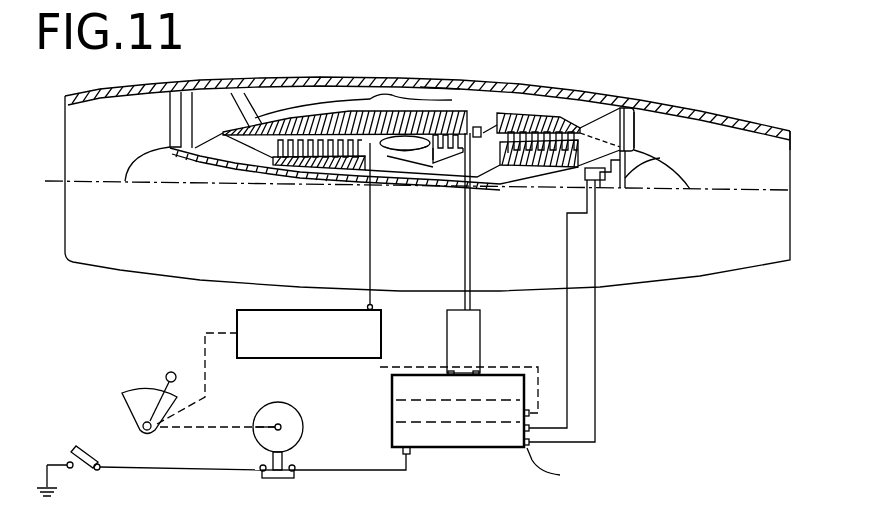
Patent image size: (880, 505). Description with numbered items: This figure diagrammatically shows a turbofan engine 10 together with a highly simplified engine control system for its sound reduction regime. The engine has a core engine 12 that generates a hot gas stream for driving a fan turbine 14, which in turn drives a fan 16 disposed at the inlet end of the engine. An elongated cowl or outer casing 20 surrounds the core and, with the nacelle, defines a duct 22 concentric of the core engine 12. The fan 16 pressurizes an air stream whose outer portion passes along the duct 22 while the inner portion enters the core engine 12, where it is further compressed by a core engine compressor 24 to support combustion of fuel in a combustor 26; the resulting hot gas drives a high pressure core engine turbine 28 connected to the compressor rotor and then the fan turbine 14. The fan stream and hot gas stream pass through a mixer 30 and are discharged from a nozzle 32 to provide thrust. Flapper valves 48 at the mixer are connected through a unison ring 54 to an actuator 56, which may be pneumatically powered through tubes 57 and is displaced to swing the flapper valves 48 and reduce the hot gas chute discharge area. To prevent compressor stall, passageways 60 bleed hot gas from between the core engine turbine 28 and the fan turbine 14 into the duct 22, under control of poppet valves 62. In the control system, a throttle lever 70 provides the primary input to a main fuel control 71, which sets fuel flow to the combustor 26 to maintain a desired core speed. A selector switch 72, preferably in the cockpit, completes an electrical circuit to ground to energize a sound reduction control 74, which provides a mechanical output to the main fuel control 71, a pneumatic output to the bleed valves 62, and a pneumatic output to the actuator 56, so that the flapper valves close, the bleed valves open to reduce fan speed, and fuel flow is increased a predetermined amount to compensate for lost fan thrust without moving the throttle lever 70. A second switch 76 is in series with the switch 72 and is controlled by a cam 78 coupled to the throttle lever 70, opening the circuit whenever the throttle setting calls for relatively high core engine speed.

The turbofan engine 10 is at (88, 271).
The core engine 12 is at (366, 104).
The fan turbine 14 is at (538, 169).
The fan 16 is at (167, 118).
The outer casing 20 is at (343, 86).
The duct 22 is at (486, 84).
The core engine compressor 24 is at (273, 151).
The combustor 26 is at (388, 150).
The core engine turbine 28 is at (443, 168).
The mixer 30 is at (637, 113).
The nozzle 32 is at (792, 131).
The flapper valve 48 is at (636, 133).
The unison ring 54 is at (643, 158).
The actuator 56 is at (600, 184).
The tubes 57 is at (567, 357).
The passageways 60 is at (483, 133).
The poppet valves 62 is at (483, 116).
The throttle lever 70 is at (143, 383).
The main fuel control 71 is at (318, 358).
The selector switch 72 is at (90, 447).
The sound reduction control 74 is at (503, 448).
The second switch 76 is at (285, 478).
The cam 78 is at (303, 426).